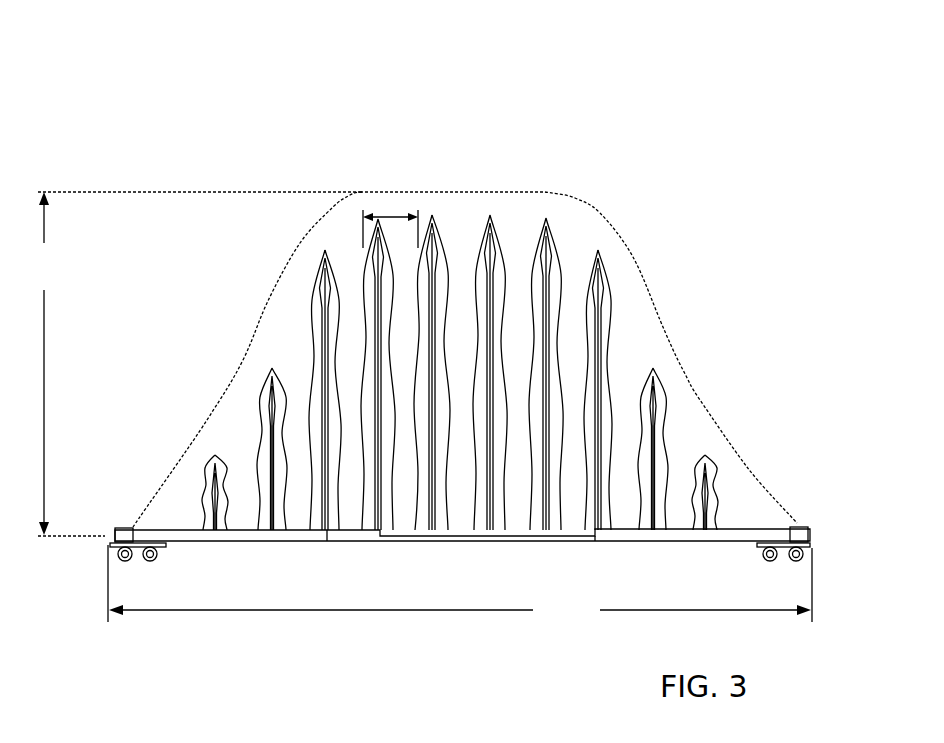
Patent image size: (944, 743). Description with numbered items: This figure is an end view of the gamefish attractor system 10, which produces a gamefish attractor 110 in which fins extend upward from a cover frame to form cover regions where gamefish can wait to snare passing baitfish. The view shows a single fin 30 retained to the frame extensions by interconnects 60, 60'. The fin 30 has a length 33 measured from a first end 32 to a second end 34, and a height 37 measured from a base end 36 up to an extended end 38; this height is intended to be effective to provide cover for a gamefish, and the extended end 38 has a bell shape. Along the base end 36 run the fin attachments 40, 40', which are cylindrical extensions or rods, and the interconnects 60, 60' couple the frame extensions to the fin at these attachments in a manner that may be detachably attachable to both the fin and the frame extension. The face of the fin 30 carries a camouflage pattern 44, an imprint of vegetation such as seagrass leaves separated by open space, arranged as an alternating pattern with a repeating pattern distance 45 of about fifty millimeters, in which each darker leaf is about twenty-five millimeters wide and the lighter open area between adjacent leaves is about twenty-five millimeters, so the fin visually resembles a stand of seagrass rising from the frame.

The gamefish attractor system 10 is at (232, 127).
The gamefish attractor 110 is at (400, 186).
The repeating pattern distance 45 is at (385, 200).
The extended end 38 is at (432, 224).
The fin 30 is at (508, 223).
The camouflage pattern 44 is at (550, 252).
The height 37 is at (71, 364).
The length 33 is at (460, 584).
The base end 36 is at (390, 541).
The first end 32 is at (117, 535).
The fin attachment 40 is at (141, 485).
The interconnect 60 is at (132, 495).
The fin attachment 40' is at (779, 483).
The interconnect 60' is at (807, 501).
The second end 34 is at (812, 530).